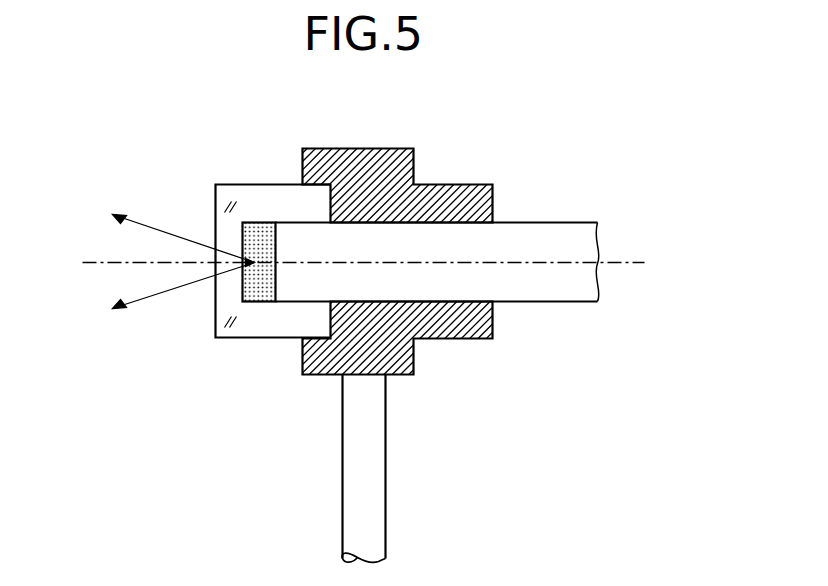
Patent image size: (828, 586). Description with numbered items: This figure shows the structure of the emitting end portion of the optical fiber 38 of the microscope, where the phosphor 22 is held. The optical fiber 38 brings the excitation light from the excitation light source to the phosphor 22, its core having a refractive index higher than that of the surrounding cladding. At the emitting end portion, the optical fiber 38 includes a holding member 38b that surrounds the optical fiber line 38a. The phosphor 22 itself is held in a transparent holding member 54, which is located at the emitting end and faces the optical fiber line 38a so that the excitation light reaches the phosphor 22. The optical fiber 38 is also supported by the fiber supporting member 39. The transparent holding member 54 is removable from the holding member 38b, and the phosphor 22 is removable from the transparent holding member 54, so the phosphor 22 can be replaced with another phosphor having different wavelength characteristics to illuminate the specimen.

The phosphor 22 is at (250, 220).
The optical fiber 38 is at (519, 138).
The optical fiber line 38a is at (552, 221).
The holding member 38b is at (364, 147).
The fiber supporting member 39 is at (383, 455).
The transparent holding member 54 is at (250, 337).